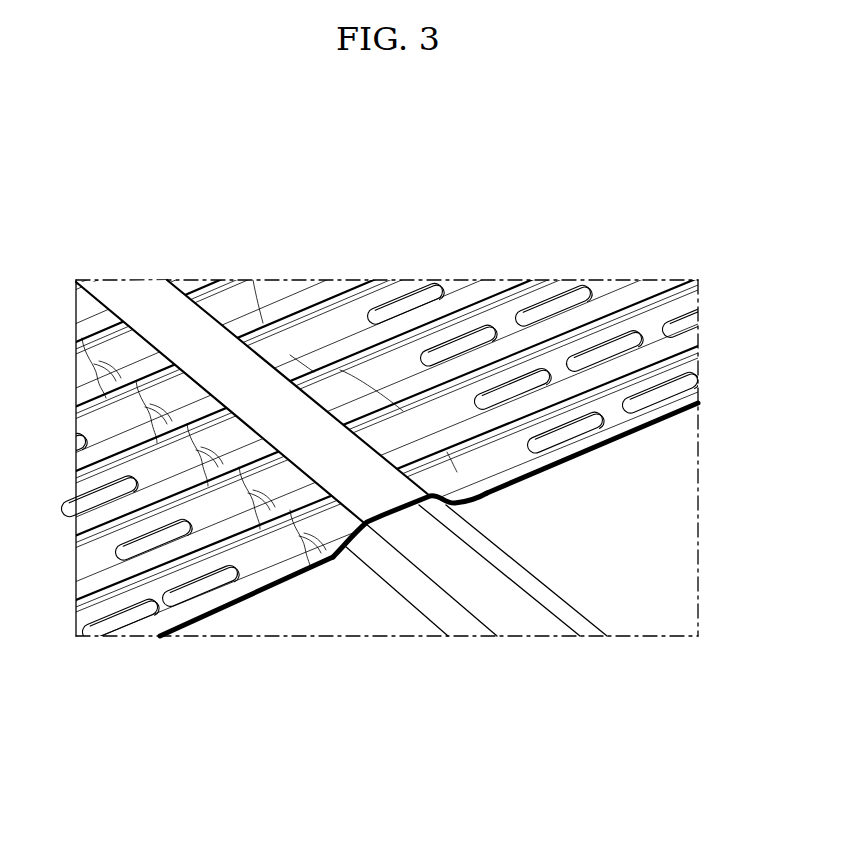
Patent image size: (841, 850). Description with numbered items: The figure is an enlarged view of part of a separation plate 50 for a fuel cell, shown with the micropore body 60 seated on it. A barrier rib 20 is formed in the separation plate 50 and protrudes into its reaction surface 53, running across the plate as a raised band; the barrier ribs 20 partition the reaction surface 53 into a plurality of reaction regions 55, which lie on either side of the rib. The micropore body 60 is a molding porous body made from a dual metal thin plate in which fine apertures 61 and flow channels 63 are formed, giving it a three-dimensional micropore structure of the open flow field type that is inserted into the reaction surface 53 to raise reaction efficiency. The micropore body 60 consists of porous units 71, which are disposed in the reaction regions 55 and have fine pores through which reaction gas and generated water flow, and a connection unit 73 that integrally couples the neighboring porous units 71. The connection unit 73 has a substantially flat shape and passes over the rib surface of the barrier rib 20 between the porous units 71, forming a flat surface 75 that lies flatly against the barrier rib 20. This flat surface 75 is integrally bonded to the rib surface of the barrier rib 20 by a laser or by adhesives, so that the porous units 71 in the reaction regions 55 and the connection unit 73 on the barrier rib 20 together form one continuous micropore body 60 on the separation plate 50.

The separation plate 50 is at (367, 222).
The reaction surface 53 is at (264, 640).
The reaction regions 55 is at (657, 473).
The micropore body 60 is at (703, 677).
The fine apertures 61 is at (203, 588).
The flow channels 63 is at (153, 508).
The porous units 71 is at (577, 463).
The connection unit 73 is at (398, 518).
The flat surface 75 is at (372, 483).
The barrier ribs 20 is at (478, 588).